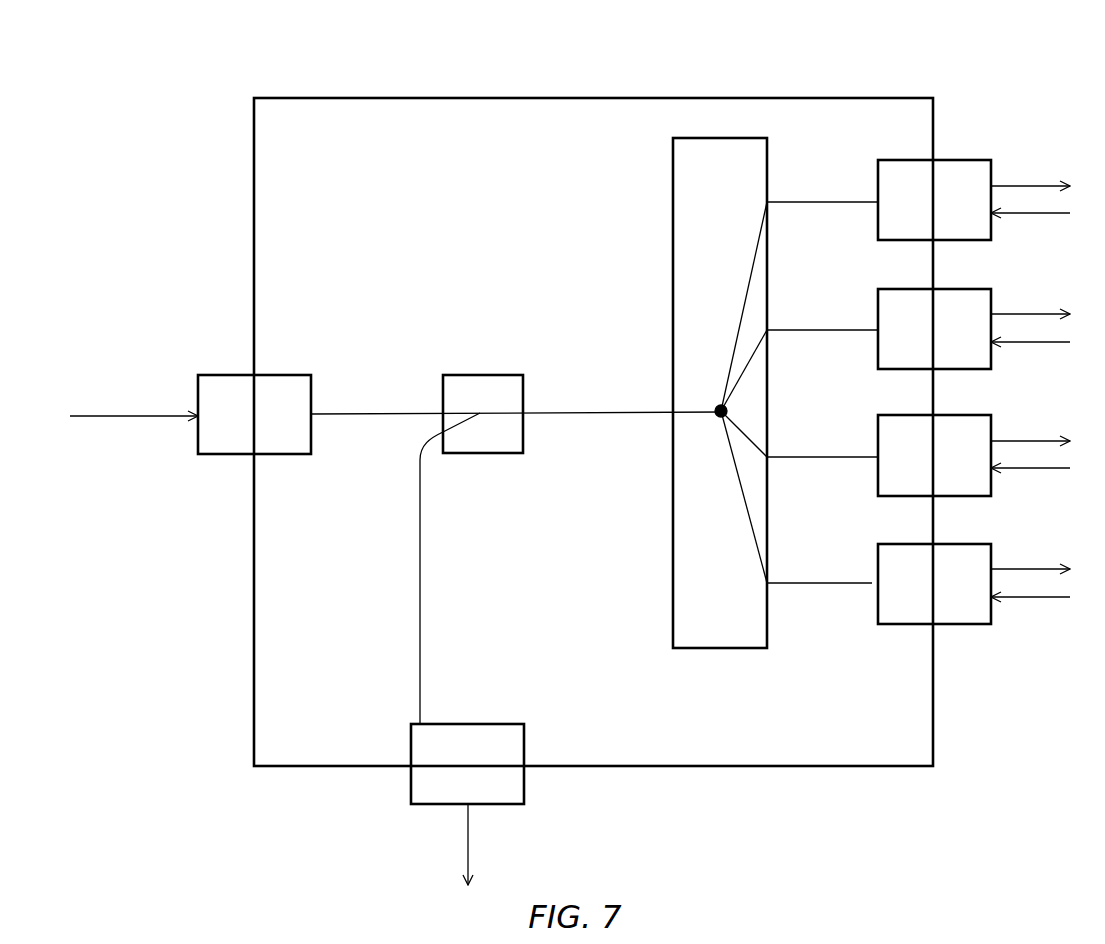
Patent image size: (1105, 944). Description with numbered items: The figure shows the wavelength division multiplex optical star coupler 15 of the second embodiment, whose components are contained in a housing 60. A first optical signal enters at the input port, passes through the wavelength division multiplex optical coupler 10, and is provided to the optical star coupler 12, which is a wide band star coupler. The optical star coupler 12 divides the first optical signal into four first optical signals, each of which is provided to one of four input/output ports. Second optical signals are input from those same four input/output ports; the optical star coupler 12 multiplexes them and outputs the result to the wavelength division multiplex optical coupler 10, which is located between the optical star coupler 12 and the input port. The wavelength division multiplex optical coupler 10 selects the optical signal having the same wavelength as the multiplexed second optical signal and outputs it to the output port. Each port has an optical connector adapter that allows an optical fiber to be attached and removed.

The wavelength division multiplex optical star coupler 15 is at (585, 71).
The housing 60 is at (253, 288).
The wavelength division multiplex optical coupler 10 is at (457, 375).
The optical star coupler 12 is at (672, 218).